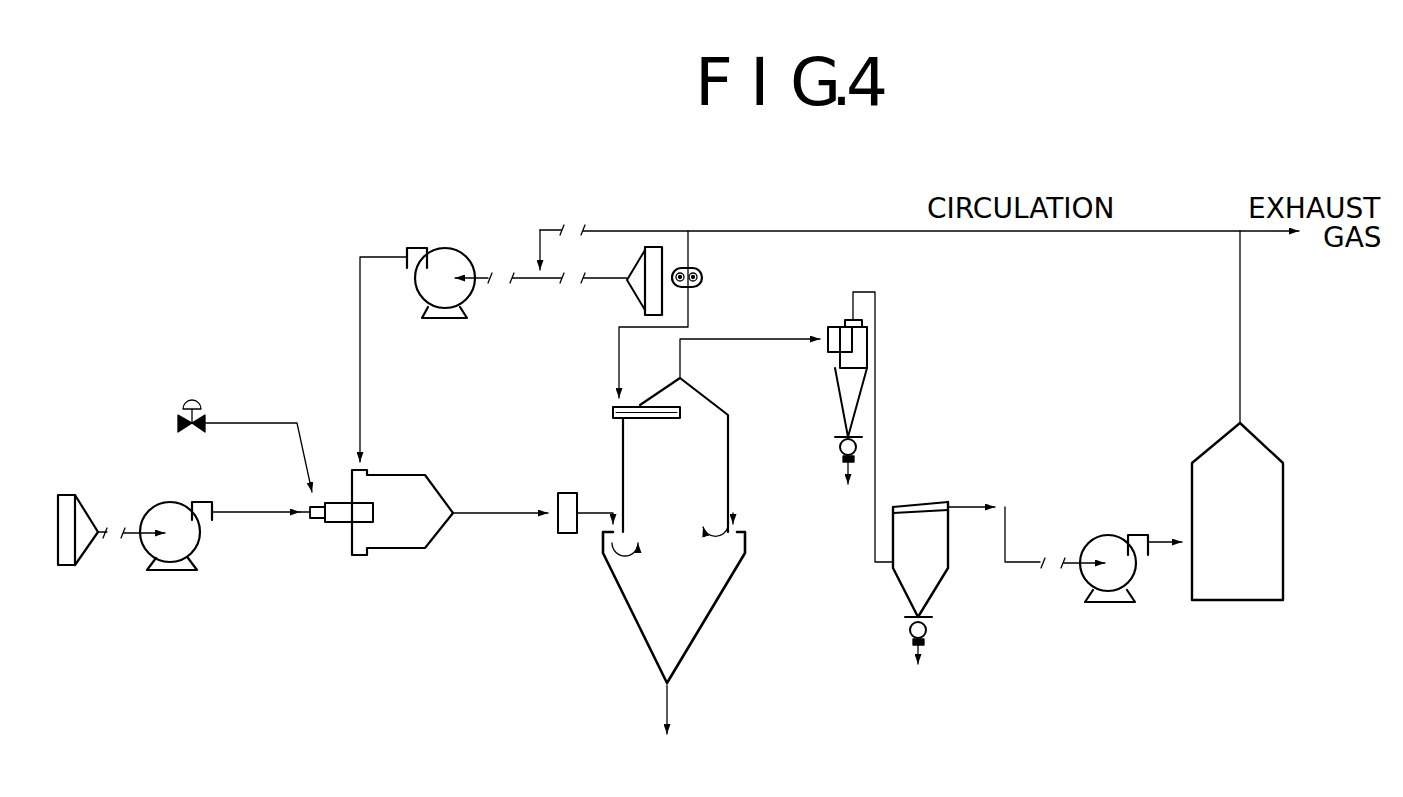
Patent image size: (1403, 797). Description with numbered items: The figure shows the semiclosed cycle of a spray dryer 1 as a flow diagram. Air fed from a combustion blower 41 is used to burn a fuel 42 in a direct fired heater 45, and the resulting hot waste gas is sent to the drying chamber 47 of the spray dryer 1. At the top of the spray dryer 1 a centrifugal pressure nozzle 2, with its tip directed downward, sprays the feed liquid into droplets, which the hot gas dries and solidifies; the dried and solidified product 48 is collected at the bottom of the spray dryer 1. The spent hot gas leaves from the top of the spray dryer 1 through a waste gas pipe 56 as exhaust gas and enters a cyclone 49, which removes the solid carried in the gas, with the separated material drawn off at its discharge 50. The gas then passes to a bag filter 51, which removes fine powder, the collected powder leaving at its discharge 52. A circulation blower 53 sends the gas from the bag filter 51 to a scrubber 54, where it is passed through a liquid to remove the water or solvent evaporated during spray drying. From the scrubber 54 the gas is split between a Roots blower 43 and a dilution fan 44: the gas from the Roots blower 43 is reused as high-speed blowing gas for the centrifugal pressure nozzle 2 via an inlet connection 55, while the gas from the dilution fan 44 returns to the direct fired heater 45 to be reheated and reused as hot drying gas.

The spray dryer 1 is at (707, 397).
The centrifugal pressure nozzle 2 is at (678, 420).
The combustion blower 41 is at (178, 572).
The fuel 42 is at (178, 423).
The Roots blower 43 is at (710, 278).
The dilution fan 44 is at (450, 320).
The direct fired heater 45 is at (372, 550).
The drying chamber 47 is at (695, 643).
The dried and solidified product 48 is at (664, 734).
The cyclone 49 is at (838, 407).
The cyclone discharge 50 is at (848, 483).
The bag filter 51 is at (933, 500).
The dust discharge 52 is at (916, 662).
The circulation blower 53 is at (1110, 587).
The scrubber 54 is at (1245, 588).
The inlet plate 55 is at (612, 412).
The waste gas pipe 56 is at (811, 350).